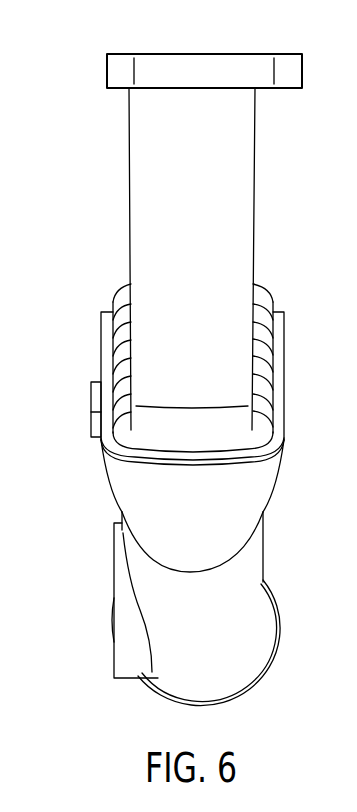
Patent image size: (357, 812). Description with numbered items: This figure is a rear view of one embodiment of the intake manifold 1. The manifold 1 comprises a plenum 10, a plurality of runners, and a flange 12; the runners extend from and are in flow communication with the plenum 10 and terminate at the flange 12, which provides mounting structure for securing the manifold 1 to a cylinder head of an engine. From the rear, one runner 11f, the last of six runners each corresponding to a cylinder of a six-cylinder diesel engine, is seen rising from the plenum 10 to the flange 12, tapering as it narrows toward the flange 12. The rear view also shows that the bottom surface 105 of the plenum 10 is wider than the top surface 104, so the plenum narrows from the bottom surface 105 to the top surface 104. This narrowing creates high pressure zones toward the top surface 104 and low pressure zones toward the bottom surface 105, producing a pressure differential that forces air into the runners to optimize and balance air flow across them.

The intake manifold 1 is at (52, 367).
The plenum 10 is at (243, 570).
The runner 11f is at (243, 158).
The flange 12 is at (203, 67).
The top surface 104 is at (223, 697).
The bottom surface 105 is at (272, 342).